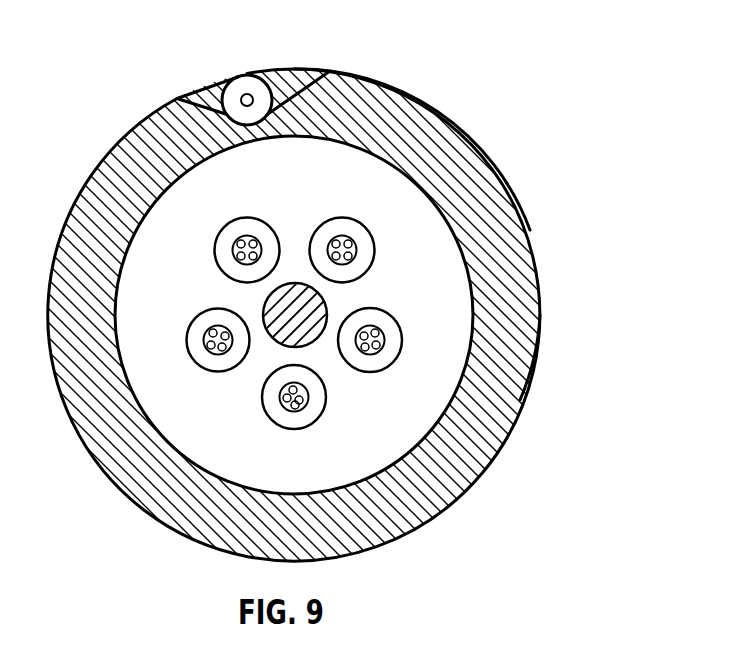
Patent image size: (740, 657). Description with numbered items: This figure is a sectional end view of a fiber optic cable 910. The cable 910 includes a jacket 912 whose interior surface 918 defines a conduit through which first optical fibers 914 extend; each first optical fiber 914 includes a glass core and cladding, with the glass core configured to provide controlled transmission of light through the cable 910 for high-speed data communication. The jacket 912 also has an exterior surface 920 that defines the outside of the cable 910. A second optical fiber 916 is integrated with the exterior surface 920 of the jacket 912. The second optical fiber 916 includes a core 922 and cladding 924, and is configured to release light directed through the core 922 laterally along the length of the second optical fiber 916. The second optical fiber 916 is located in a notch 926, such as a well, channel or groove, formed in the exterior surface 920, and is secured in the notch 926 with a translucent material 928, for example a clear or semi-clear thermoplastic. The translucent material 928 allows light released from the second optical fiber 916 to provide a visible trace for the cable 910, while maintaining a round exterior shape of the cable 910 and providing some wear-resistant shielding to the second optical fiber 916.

The fiber optic cable 910 is at (616, 190).
The jacket 912 is at (496, 406).
The first optical fiber 914 is at (208, 334).
The second optical fiber 916 is at (230, 80).
The interior surface 918 is at (385, 466).
The exterior surface 920 is at (538, 311).
The core 922 is at (247, 100).
The cladding 924 is at (260, 88).
The notch 926 is at (228, 83).
The translucent material 928 is at (330, 71).